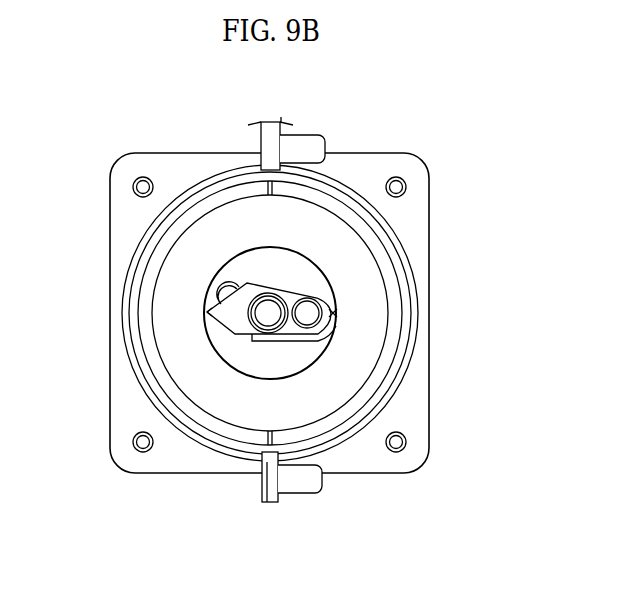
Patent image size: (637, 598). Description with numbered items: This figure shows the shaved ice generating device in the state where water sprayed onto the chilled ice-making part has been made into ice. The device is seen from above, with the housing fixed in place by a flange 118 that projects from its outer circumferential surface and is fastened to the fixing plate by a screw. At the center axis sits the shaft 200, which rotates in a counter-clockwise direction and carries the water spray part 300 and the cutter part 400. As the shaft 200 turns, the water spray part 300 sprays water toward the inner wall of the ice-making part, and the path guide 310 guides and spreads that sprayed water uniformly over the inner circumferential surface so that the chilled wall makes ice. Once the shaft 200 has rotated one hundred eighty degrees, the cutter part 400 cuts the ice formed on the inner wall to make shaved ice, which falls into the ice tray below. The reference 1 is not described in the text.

The flange 118 is at (412, 228).
The sensor assembly 1 is at (212, 336).
The cutter part 400 is at (206, 313).
The shaft 200 is at (268, 316).
The path guide 310 is at (334, 336).
The water spray part 300 is at (324, 291).